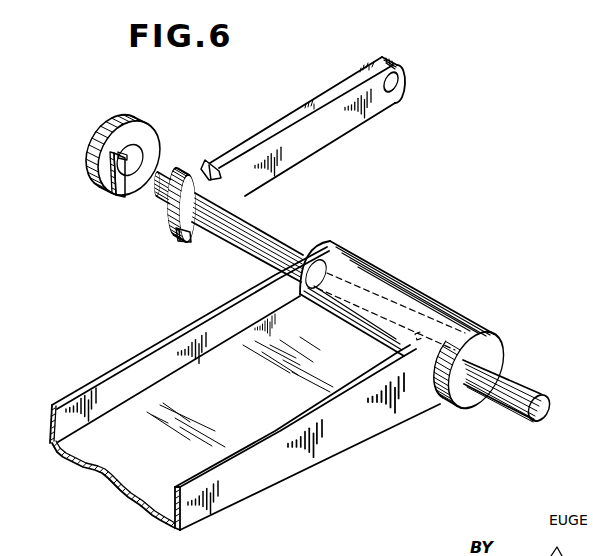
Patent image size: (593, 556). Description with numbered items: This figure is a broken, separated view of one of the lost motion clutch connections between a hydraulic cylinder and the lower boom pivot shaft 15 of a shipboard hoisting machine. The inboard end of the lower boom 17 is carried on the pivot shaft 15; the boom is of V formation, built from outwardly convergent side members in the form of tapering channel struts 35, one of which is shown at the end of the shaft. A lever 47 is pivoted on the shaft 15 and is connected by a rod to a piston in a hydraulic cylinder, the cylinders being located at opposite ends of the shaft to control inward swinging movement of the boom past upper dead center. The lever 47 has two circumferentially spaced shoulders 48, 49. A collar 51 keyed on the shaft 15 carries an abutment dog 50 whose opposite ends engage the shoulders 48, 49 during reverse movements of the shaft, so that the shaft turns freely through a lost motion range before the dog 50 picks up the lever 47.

The lower boom pivot shaft 15 is at (523, 395).
The lower boom 17 is at (76, 387).
The tapering channel strut 35 is at (168, 512).
The lever 47 is at (291, 118).
The shoulder 48 is at (213, 166).
The shoulder 49 is at (178, 234).
The abutment dog 50 is at (119, 198).
The collar 51 is at (122, 140).